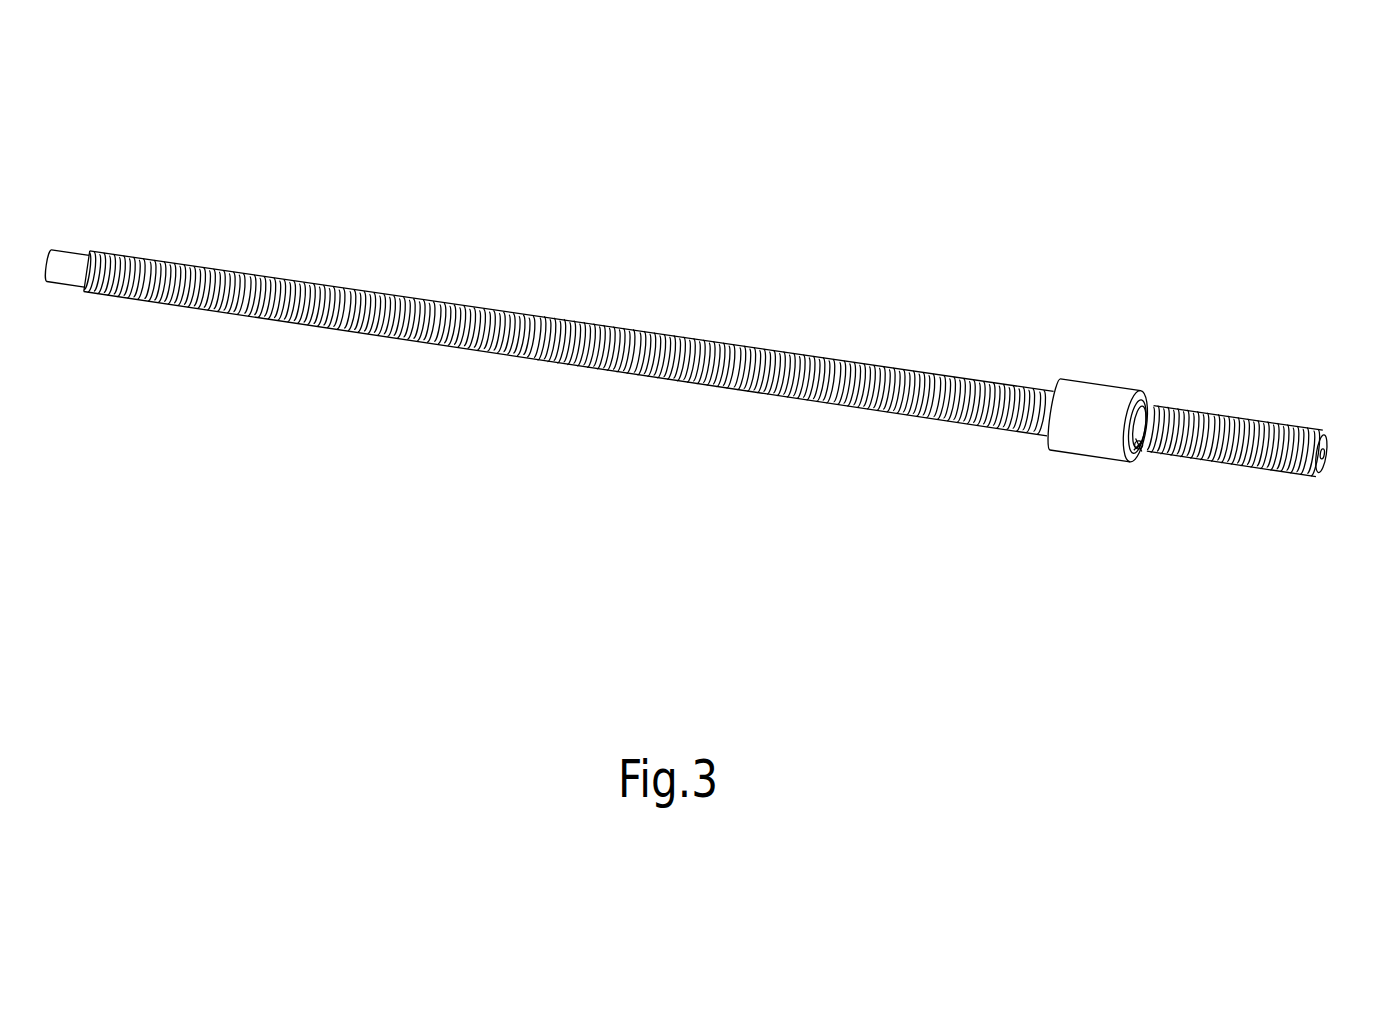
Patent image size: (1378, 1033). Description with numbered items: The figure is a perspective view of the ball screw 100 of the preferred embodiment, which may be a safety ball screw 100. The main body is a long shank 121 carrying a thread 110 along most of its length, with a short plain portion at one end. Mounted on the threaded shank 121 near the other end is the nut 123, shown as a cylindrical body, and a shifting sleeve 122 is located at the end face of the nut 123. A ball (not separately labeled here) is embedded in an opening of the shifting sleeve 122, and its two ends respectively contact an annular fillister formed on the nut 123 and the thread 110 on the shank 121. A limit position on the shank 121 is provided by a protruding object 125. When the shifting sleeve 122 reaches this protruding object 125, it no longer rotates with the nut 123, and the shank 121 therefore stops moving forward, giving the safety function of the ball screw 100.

The ball screw 100 is at (660, 178).
The thread 110 is at (1230, 450).
The shank 121 is at (1326, 435).
The shifting sleeve 122 is at (1150, 402).
The nut 123 is at (1083, 397).
The protruding object 125 is at (1130, 455).